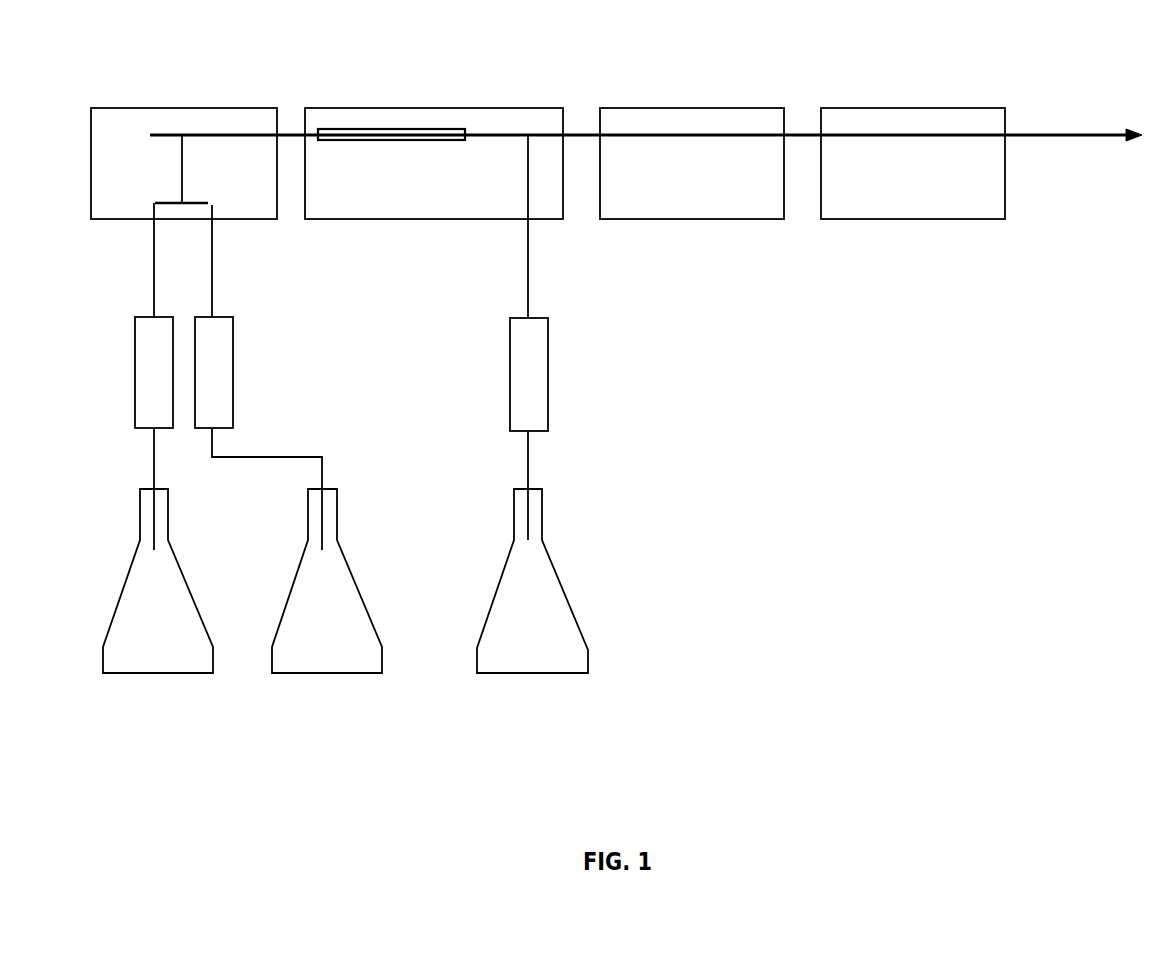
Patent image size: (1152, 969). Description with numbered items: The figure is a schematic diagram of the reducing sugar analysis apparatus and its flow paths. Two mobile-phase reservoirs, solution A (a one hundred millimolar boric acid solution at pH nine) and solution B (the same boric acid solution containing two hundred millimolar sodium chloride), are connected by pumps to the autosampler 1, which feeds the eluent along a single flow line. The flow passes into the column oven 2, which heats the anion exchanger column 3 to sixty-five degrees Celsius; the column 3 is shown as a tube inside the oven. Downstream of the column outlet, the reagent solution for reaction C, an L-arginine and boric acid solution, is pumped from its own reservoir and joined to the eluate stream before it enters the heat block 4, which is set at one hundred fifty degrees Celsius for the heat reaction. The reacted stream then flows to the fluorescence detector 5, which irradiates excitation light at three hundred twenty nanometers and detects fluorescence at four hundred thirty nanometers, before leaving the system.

The autosampler 1 is at (150, 107).
The column oven 2 is at (380, 108).
The column 3 is at (350, 140).
The heat block 4 is at (652, 108).
The fluorescence detector 5 is at (877, 108).
The solution A is at (133, 647).
The solution B is at (337, 652).
The reagent solution for reaction C is at (523, 652).